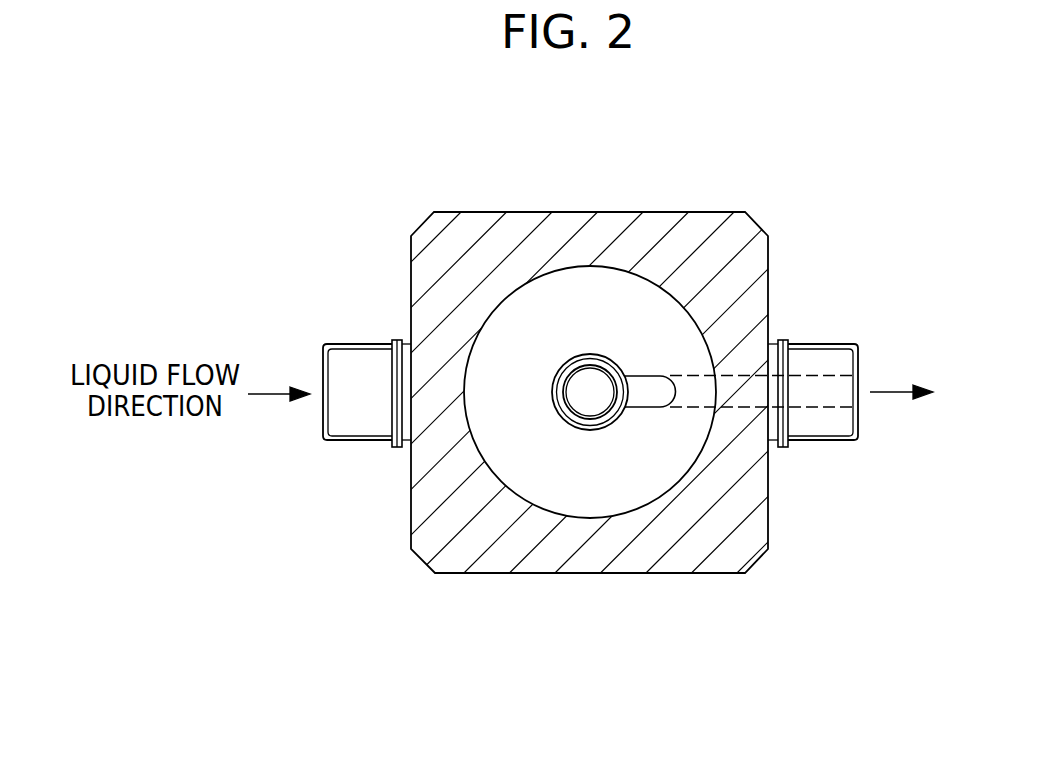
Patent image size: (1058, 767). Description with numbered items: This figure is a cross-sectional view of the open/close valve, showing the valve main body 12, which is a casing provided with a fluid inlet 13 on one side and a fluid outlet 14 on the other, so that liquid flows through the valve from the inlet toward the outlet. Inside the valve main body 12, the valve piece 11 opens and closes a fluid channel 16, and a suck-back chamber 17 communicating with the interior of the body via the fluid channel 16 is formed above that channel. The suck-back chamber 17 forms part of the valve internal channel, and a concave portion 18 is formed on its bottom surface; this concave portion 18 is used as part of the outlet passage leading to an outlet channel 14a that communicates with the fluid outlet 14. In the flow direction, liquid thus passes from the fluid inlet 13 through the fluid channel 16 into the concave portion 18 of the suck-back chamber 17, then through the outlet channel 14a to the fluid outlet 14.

The valve piece 11 is at (582, 392).
The valve main body 12 is at (604, 573).
The fluid inlet 13 is at (323, 424).
The fluid outlet 14 is at (858, 425).
The outlet channel 14a is at (672, 408).
The fluid channel 16 is at (567, 417).
The suck-back chamber 17 is at (594, 287).
The concave portion 18 is at (639, 382).